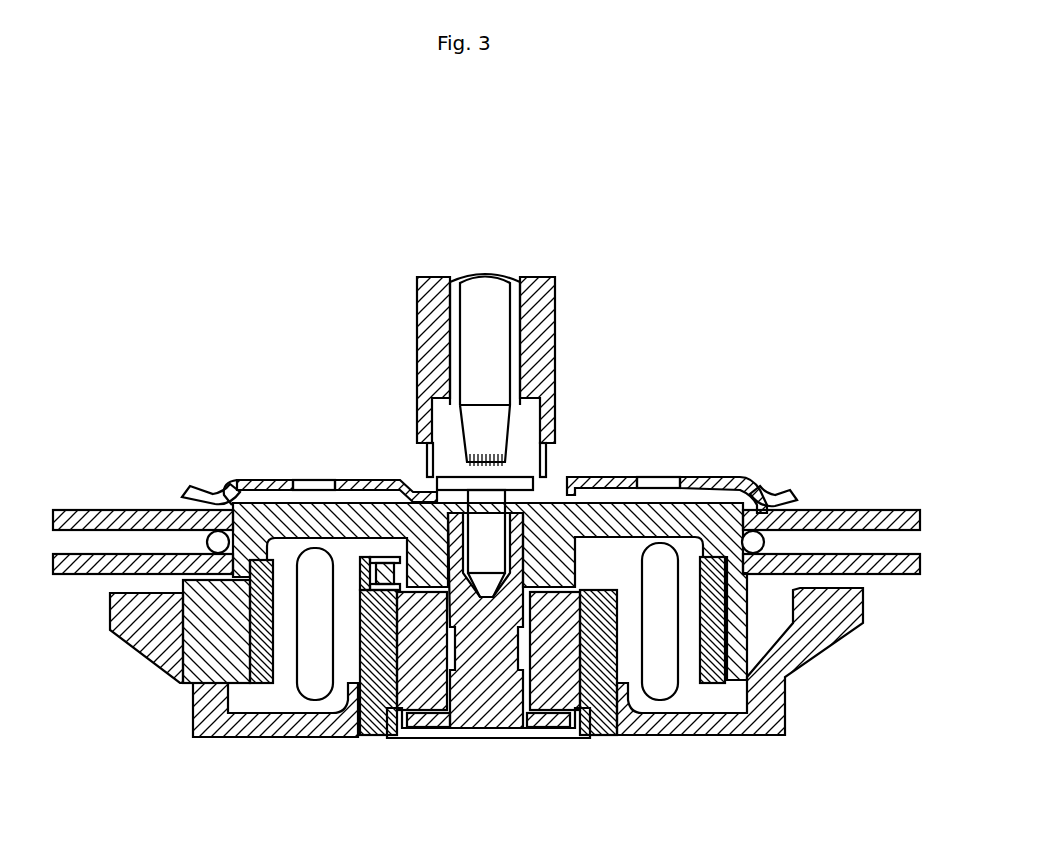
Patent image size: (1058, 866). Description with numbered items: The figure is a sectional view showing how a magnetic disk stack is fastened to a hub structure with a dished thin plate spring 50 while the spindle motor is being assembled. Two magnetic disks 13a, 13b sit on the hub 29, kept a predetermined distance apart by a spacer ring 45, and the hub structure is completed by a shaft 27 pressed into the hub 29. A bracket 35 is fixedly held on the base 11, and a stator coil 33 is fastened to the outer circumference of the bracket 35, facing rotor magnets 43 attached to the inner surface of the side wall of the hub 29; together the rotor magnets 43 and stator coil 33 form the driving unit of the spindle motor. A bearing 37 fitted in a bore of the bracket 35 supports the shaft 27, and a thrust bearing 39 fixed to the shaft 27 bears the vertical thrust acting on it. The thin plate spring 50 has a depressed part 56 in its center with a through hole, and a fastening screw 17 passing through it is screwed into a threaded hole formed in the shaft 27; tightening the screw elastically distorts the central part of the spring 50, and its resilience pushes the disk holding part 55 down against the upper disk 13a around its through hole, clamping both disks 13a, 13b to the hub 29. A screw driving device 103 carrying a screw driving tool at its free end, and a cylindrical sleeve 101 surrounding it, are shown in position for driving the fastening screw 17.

The base 11 is at (820, 647).
The magnetic disk 13a is at (60, 512).
The magnetic disk 13b is at (60, 577).
The fastening screw 17 is at (553, 437).
The shaft 27 is at (510, 557).
The hub 29 is at (703, 477).
The stator coil 33 is at (236, 480).
The bracket 35 is at (333, 740).
The bearing 37 is at (367, 737).
The thrust bearing 39 is at (430, 727).
The rotor magnets 43 is at (713, 670).
The spacer ring 45 is at (765, 535).
The thin plate spring 50 is at (285, 478).
The disk holding part 55 is at (205, 492).
The depressed part 56 is at (425, 490).
The cylindrical sleeve 101 is at (555, 302).
The screw driving device 103 is at (440, 440).